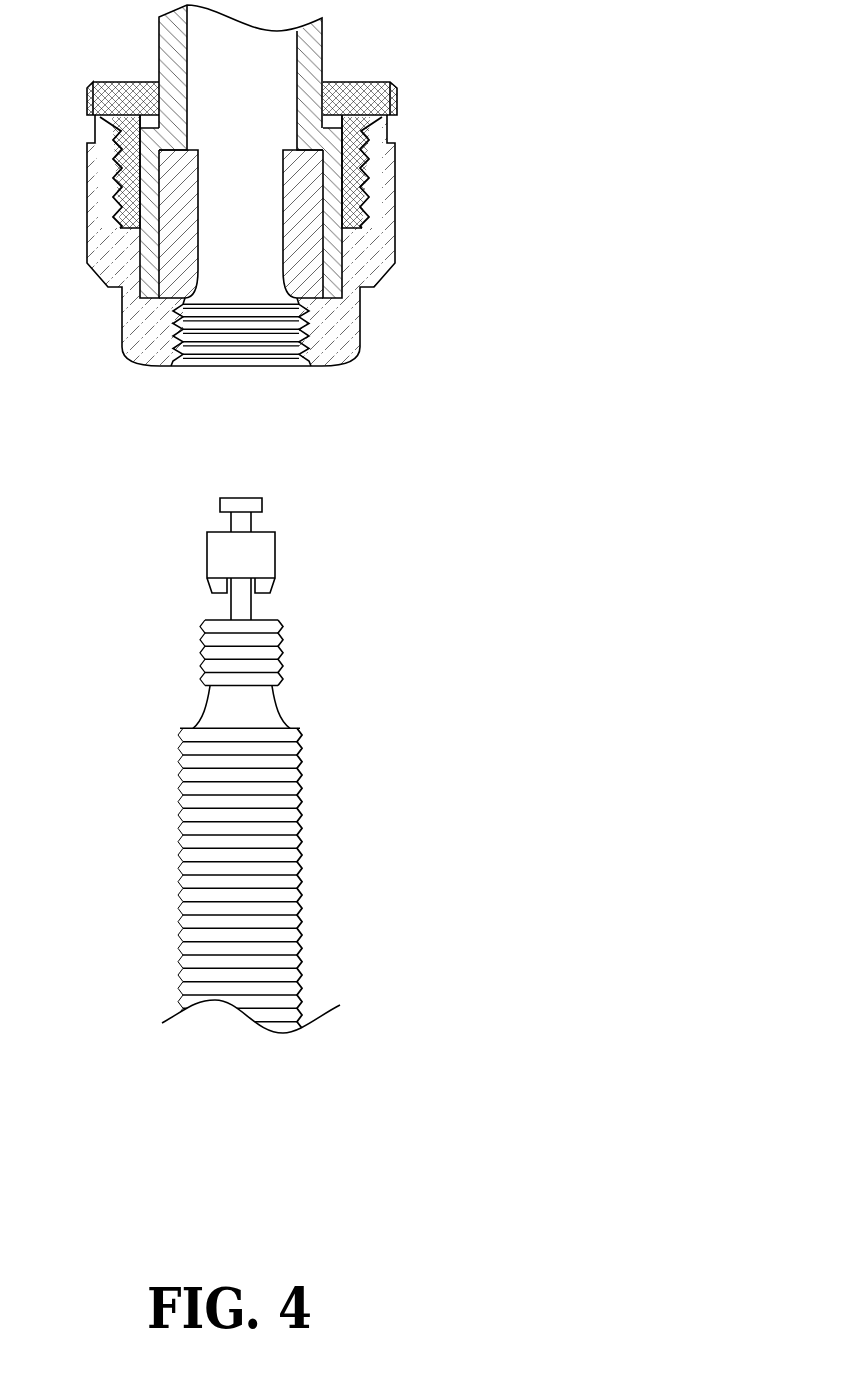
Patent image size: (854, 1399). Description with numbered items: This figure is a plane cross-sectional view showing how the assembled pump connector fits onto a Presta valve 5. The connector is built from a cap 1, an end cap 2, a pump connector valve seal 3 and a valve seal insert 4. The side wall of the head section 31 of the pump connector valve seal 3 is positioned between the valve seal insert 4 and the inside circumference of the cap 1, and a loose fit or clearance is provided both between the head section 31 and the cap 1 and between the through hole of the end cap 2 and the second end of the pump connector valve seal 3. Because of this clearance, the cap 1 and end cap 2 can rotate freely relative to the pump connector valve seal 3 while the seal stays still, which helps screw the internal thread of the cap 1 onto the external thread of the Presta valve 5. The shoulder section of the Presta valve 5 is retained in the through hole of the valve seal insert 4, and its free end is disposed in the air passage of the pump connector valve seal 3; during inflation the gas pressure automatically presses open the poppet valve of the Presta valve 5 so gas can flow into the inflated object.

The cap 1 is at (400, 204).
The end cap 2 is at (370, 80).
The pump connector valve seal 3 is at (333, 36).
The head section 31 is at (333, 173).
The valve seal insert 4 is at (307, 272).
The Presta valve 5 is at (330, 771).